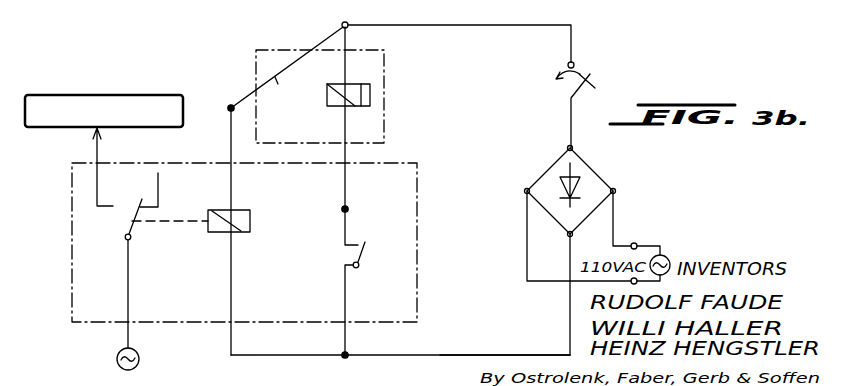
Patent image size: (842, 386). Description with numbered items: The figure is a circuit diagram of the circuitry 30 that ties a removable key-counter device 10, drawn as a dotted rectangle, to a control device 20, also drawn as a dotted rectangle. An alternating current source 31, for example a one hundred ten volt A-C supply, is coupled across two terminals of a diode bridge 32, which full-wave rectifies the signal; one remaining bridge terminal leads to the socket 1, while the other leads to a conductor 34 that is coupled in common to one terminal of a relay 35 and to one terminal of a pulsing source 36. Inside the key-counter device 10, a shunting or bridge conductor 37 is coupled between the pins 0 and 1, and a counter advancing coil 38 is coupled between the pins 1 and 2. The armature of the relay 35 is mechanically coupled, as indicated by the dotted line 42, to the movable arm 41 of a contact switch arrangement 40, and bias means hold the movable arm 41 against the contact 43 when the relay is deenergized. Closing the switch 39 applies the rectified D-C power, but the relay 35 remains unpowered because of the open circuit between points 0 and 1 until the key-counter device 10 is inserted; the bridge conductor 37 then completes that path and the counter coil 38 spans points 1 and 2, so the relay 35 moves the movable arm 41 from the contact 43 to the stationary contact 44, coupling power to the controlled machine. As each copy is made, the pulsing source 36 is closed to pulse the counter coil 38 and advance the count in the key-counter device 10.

The pin 0 is at (249, 121).
The socket 1 is at (369, 19).
The pin 2 is at (364, 207).
The key-counter device 10 is at (287, 52).
The control device 20 is at (72, 208).
The circuitry 30 is at (400, 369).
The alternating current source 31 is at (668, 255).
The diode bridge 32 is at (548, 174).
The conductor 34 is at (448, 355).
The relay 35 is at (242, 233).
The pulsing source 36 is at (363, 253).
The shunting or bridge conductor 37 is at (284, 93).
The counter advancing coil 38 is at (326, 96).
The switch 39 is at (566, 86).
The contact switch arrangement 40 is at (142, 246).
The movable arm 41 is at (123, 218).
The dotted line 42 is at (167, 215).
The contact 43 is at (160, 185).
The stationary contact 44 is at (96, 148).